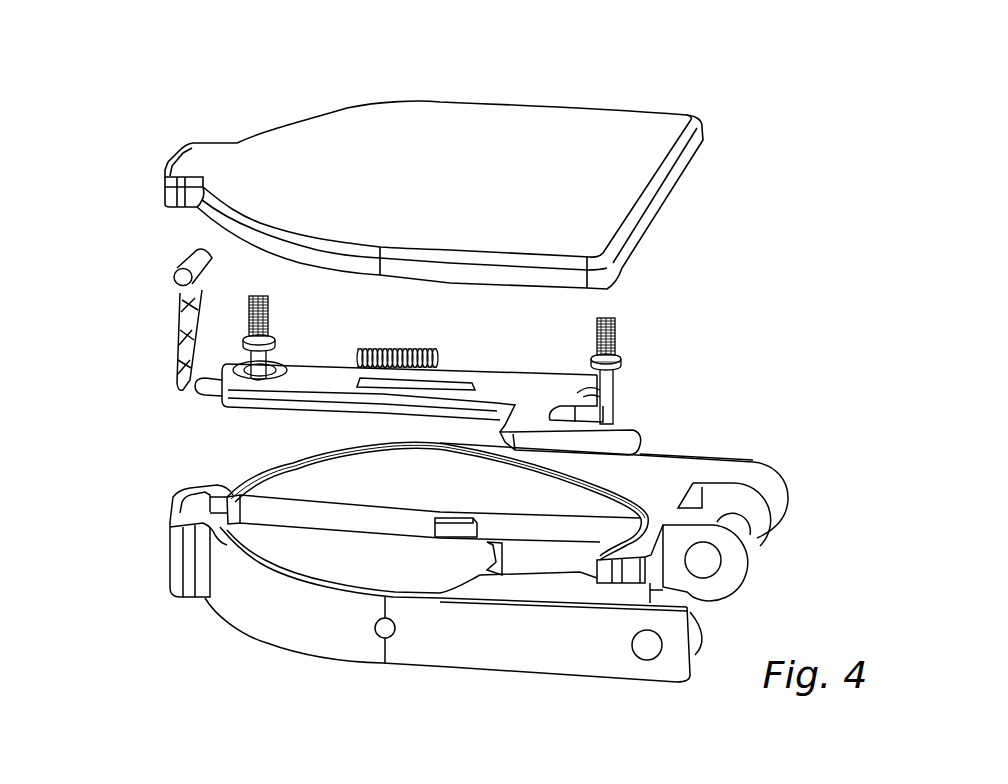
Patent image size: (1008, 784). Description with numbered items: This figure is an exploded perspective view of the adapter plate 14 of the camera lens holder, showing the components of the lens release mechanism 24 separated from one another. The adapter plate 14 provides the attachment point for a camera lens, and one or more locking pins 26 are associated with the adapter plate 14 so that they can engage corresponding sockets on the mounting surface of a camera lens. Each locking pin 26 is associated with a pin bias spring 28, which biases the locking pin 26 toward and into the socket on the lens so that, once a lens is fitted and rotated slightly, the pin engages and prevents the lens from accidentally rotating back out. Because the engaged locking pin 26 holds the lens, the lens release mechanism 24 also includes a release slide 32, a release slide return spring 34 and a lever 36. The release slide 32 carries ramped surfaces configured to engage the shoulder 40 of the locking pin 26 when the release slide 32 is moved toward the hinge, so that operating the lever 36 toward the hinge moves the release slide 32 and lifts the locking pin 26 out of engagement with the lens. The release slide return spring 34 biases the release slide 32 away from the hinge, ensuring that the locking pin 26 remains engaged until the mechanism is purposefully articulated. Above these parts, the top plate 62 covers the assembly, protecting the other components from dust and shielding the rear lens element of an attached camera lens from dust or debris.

The adapter plate 14 is at (320, 627).
The lens release mechanism 24 is at (740, 393).
The locking pin 26 is at (672, 379).
The pin bias spring 28 is at (612, 318).
The release slide 32 is at (295, 400).
The release slide return spring 34 is at (390, 347).
The lever 36 is at (187, 307).
The shoulder 40 is at (617, 363).
The top plate 62 is at (363, 148).